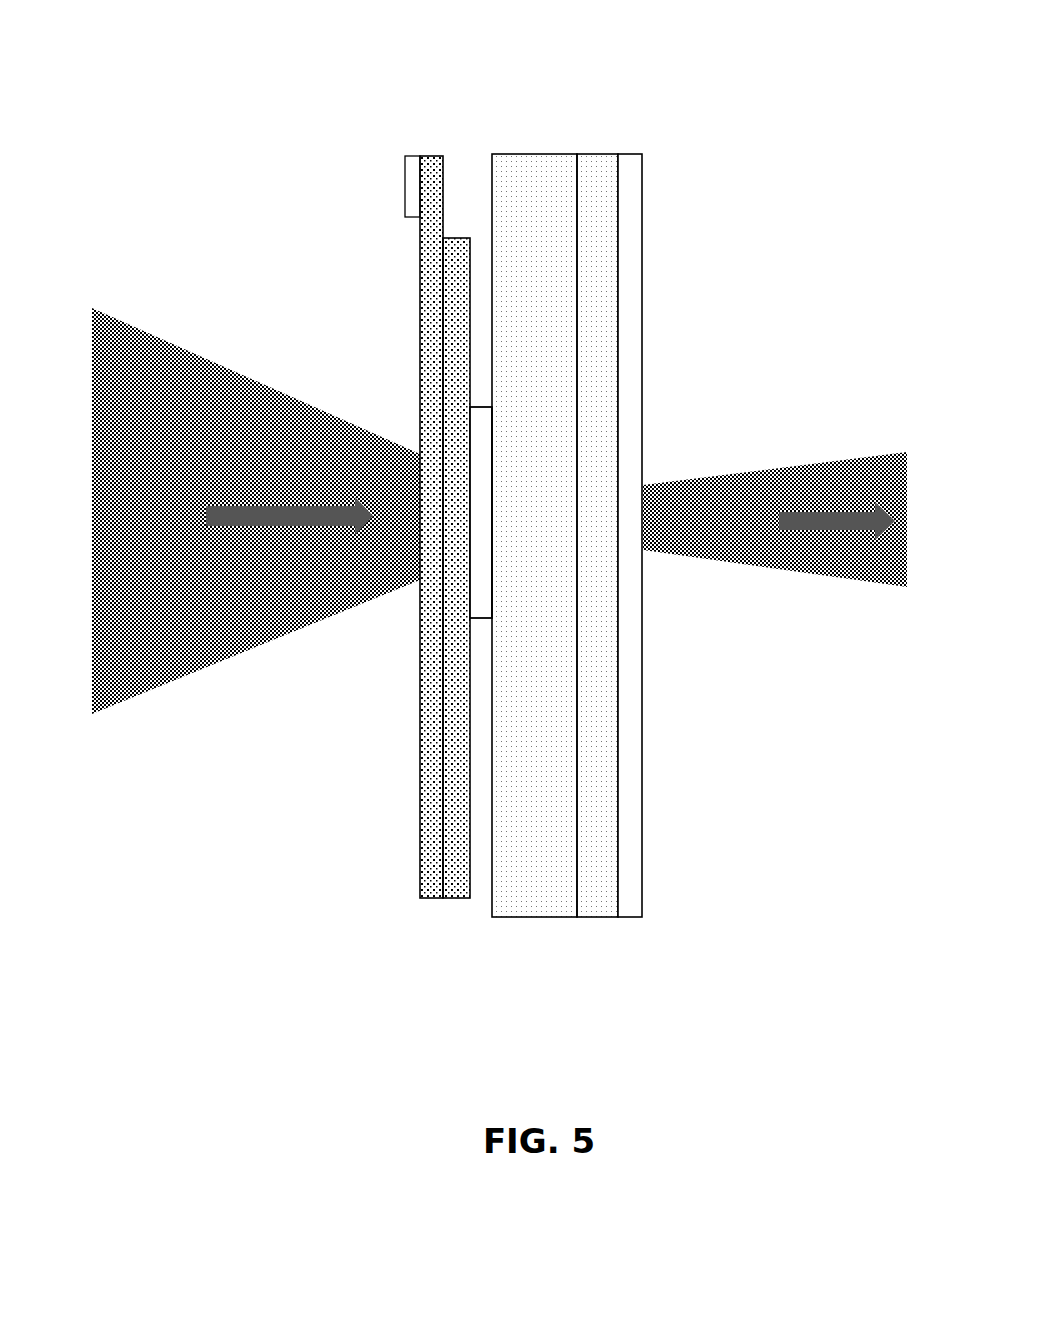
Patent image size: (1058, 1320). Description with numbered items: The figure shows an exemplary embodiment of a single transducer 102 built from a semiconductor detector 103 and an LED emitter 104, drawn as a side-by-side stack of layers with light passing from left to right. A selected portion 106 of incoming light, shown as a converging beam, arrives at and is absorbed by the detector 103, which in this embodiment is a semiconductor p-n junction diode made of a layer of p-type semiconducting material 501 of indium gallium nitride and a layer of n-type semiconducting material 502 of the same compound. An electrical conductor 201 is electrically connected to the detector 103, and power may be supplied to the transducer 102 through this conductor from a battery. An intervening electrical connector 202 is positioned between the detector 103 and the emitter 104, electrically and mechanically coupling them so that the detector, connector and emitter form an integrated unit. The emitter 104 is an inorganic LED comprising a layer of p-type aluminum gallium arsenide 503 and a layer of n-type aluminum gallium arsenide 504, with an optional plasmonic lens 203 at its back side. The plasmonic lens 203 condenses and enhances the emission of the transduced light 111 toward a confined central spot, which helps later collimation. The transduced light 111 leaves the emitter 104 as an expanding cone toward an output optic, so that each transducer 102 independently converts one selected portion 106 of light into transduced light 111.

The transducer 102 is at (803, 137).
The detector 103 is at (395, 565).
The emitter 104 is at (641, 510).
The selected portion 106 is at (246, 630).
The transduced light 111 is at (700, 500).
The electrical conductor 201 is at (417, 162).
The electrical connector 202 is at (482, 412).
The plasmonic lens 203 is at (627, 180).
The p-type semiconducting material 501 is at (430, 710).
The n-type semiconducting material 502 is at (457, 833).
The p-type aluminum gallium arsenide layer 503 is at (553, 860).
The n-type aluminum gallium arsenide layer 504 is at (602, 908).